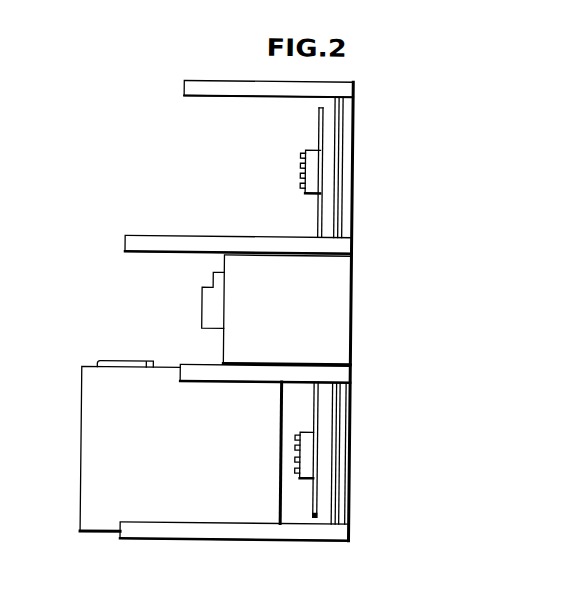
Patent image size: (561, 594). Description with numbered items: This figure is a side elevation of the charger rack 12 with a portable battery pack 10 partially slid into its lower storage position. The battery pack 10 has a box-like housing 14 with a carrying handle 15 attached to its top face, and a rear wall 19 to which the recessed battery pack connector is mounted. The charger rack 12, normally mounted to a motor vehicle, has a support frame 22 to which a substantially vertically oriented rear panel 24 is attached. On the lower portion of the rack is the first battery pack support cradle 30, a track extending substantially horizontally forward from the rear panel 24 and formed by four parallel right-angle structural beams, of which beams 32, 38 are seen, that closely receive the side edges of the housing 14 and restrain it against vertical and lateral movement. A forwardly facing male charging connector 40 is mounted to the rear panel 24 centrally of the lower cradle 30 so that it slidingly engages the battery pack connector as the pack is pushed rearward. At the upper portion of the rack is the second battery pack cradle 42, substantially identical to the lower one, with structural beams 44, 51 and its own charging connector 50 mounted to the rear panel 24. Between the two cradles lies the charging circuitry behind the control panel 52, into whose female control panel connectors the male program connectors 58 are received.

The portable battery pack 10 is at (99, 465).
The charger rack 12 is at (358, 197).
The box-like housing 14 is at (101, 388).
The carrying handle 15 is at (136, 362).
The rear wall 19 is at (282, 505).
The support frame 22 is at (347, 174).
The rear panel 24 is at (318, 116).
The first battery pack support cradle 30 is at (295, 497).
The structural beam 32 is at (340, 534).
The structural beam 38 is at (334, 378).
The charging connector 40 is at (305, 460).
The second battery pack cradle 42 is at (271, 179).
The structural beam 44 is at (338, 250).
The charging connector 50 is at (307, 168).
The structural beam 51 is at (335, 91).
The control panel 52 is at (222, 344).
The male program connector 58 is at (215, 299).